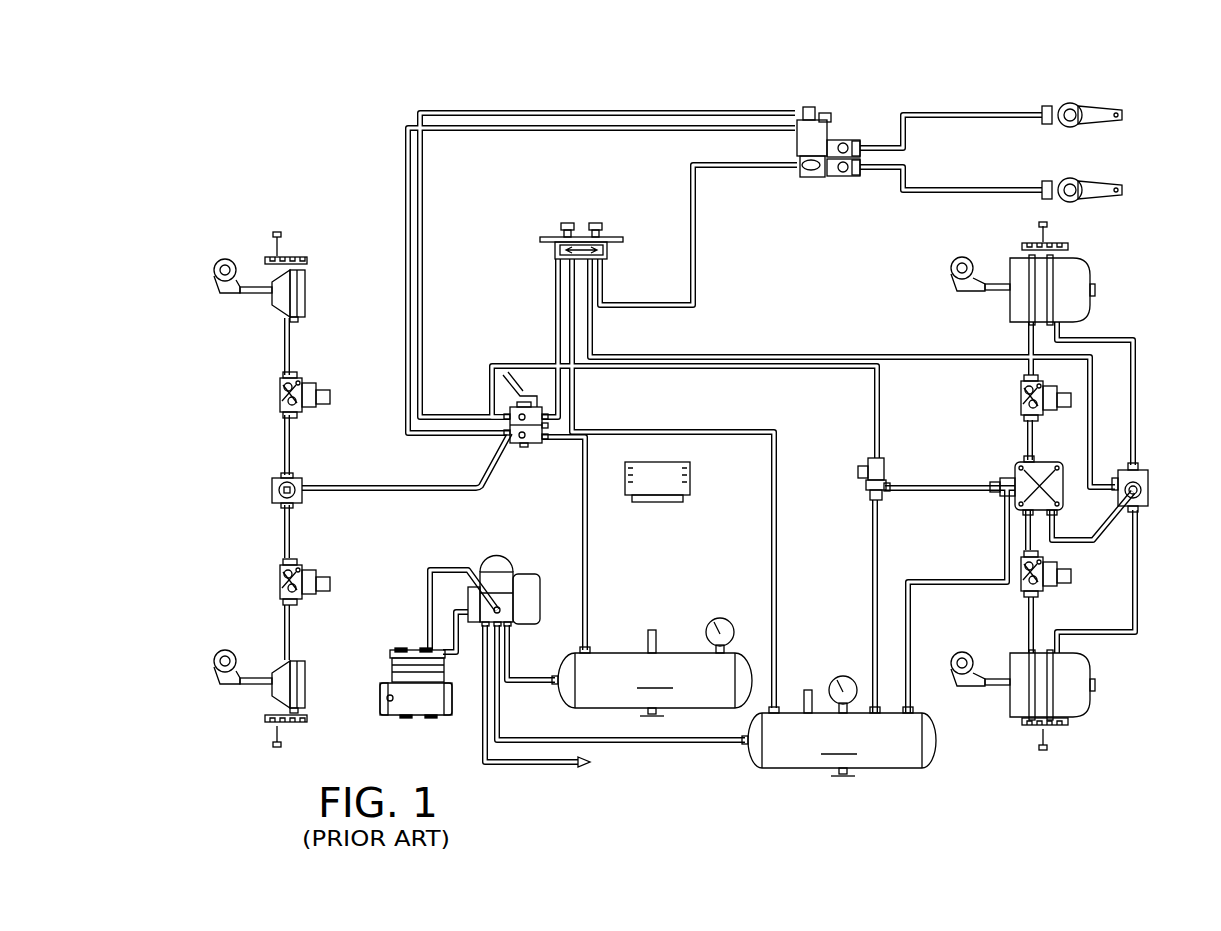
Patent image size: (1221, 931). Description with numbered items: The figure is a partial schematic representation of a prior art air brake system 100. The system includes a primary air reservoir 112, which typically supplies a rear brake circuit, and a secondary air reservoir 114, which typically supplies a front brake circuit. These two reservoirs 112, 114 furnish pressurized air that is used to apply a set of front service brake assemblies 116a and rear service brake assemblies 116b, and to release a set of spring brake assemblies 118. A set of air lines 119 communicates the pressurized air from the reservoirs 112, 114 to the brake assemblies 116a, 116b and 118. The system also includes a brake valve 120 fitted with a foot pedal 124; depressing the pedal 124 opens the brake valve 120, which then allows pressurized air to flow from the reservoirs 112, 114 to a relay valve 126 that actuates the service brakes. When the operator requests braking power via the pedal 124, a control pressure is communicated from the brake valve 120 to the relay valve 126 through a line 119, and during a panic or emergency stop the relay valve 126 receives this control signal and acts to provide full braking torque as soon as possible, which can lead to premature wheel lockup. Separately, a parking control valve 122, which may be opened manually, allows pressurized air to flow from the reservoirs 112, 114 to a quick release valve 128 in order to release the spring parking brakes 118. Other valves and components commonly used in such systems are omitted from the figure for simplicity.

The brake system 100 is at (336, 150).
The primary air reservoir 112 is at (652, 667).
The secondary air reservoir 114 is at (839, 726).
The front service brake assemblies 116a is at (294, 280).
The rear service brake assemblies 116b is at (1020, 275).
The spring brake assemblies 118 is at (1080, 275).
The air lines 119 is at (824, 369).
The brake valve 120 is at (528, 443).
The parking control valve 122 is at (553, 243).
The foot pedal 124 is at (513, 405).
The relay valve 126 is at (1018, 464).
The quick release valve 128 is at (1148, 472).